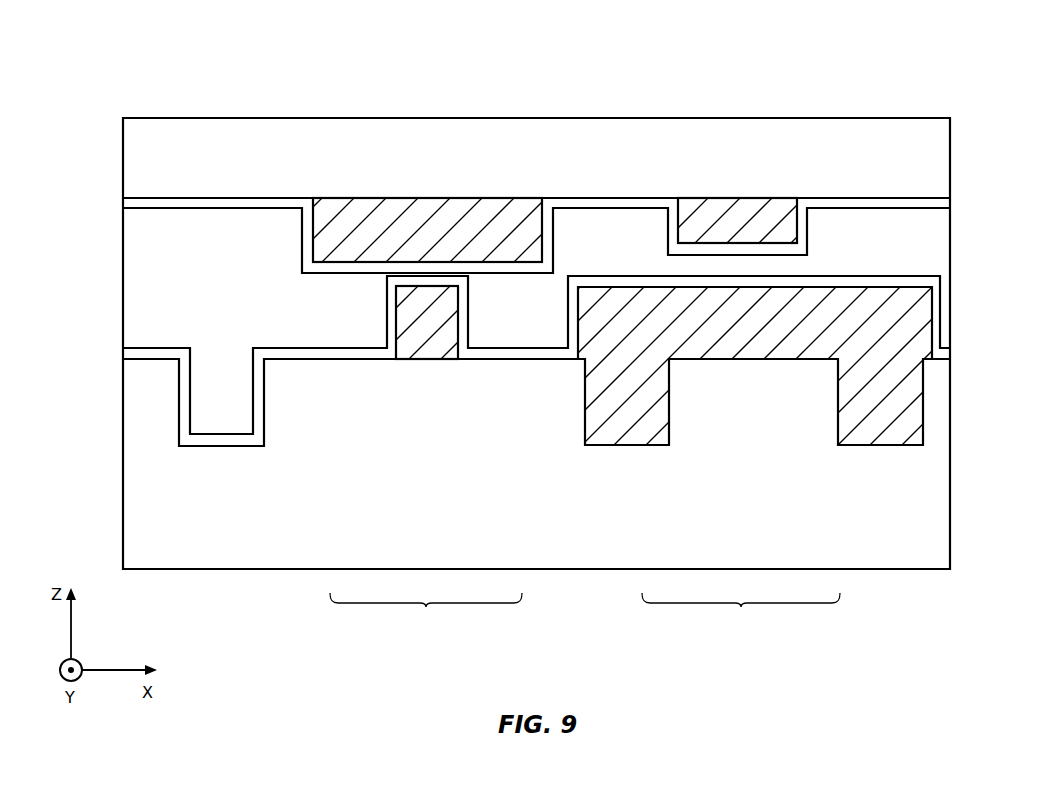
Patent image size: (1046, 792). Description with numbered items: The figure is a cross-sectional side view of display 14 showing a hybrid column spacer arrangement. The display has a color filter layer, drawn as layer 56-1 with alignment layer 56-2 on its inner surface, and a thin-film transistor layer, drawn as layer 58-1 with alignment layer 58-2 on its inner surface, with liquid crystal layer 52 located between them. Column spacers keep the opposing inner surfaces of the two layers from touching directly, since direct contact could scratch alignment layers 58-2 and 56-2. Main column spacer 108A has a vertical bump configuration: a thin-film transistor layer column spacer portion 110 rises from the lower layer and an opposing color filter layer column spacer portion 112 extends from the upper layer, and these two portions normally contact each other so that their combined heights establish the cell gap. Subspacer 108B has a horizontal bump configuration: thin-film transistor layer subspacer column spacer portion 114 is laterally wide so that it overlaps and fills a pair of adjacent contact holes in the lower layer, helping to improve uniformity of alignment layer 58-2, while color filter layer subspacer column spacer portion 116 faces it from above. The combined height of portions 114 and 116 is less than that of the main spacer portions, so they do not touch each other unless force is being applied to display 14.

The display 14 is at (884, 64).
The liquid crystal layer 52 is at (134, 273).
The first insulating layer 56-1 is at (134, 166).
The alignment layer 56-2 is at (134, 204).
The first substrate layer 58-1 is at (134, 499).
The alignment layer 58-2 is at (134, 356).
The main column spacer 108A is at (426, 612).
The subspacer 108B is at (741, 612).
The thin-film transistor layer column spacer portion 110 is at (447, 308).
The color filter layer column spacer portion 112 is at (528, 232).
The thin-film transistor layer subspacer column spacer portion 114 is at (658, 300).
The color filter layer subspacer column spacer portion 116 is at (777, 217).